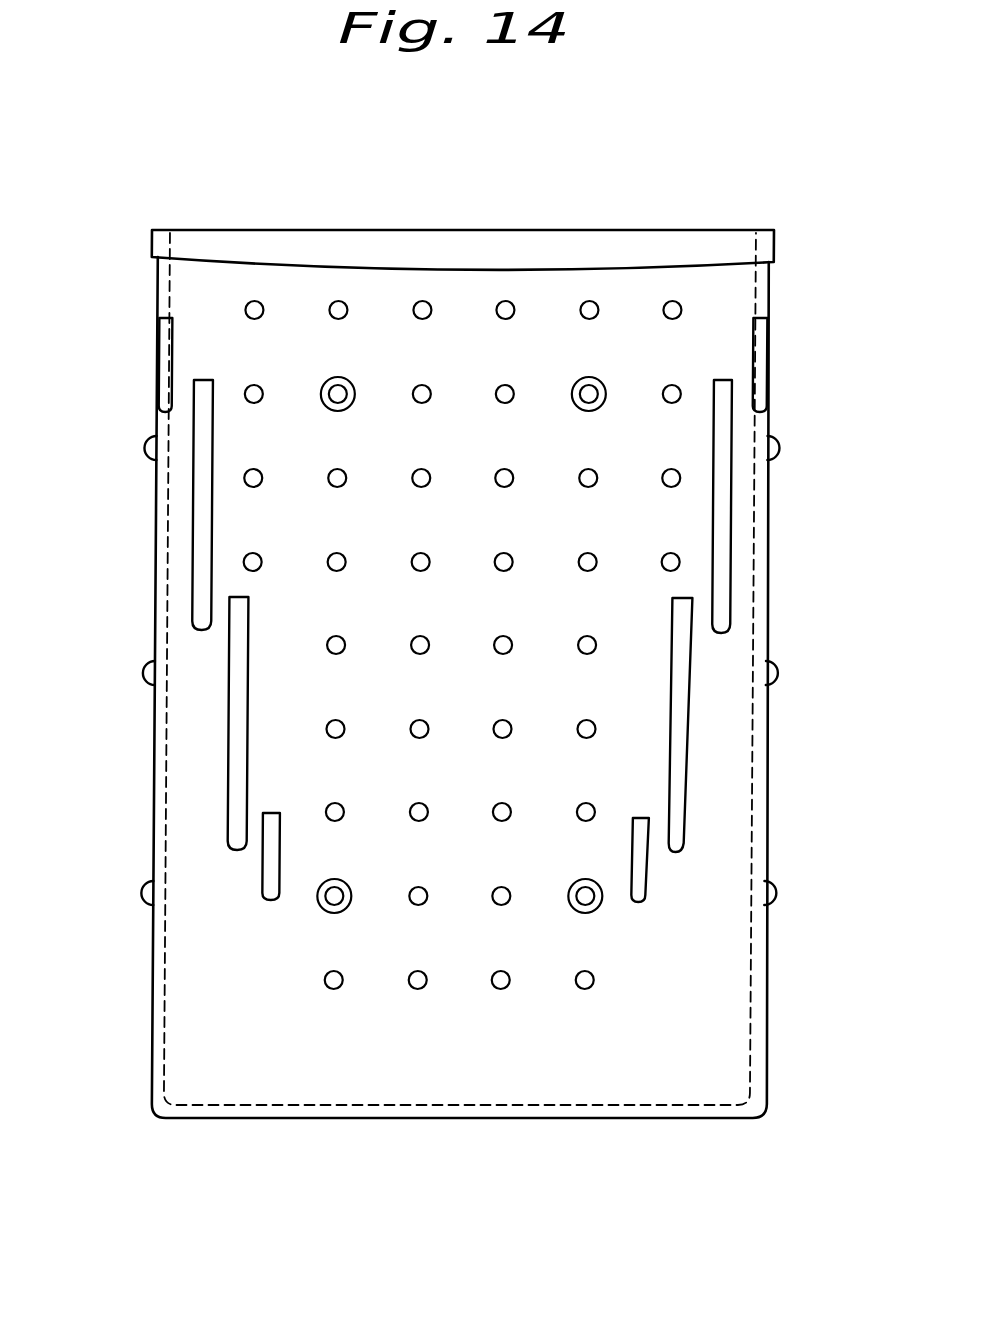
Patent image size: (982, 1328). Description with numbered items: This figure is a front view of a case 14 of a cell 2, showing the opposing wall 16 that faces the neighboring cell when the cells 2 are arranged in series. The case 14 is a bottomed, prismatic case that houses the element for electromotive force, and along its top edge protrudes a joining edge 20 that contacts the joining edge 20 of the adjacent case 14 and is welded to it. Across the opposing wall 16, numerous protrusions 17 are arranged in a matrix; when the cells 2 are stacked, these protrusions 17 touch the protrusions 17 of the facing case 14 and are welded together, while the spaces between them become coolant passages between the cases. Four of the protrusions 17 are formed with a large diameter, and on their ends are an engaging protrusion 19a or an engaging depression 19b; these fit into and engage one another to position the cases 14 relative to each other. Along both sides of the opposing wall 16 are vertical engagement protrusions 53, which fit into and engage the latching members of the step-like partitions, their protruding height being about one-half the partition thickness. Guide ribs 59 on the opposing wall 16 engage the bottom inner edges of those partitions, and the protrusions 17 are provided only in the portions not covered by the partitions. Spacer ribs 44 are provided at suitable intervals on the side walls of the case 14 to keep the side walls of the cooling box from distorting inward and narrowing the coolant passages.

The cell 2 is at (146, 280).
The case 14 is at (200, 298).
The opposing wall 16 is at (477, 370).
The protrusion 17 is at (426, 306).
The engaging protrusion 19a is at (342, 388).
The engaging depression 19b is at (594, 388).
The joining edge 20 is at (293, 248).
The spacer rib 44 is at (777, 450).
The engagement protrusion 53 is at (762, 384).
The guide rib 59 is at (642, 890).